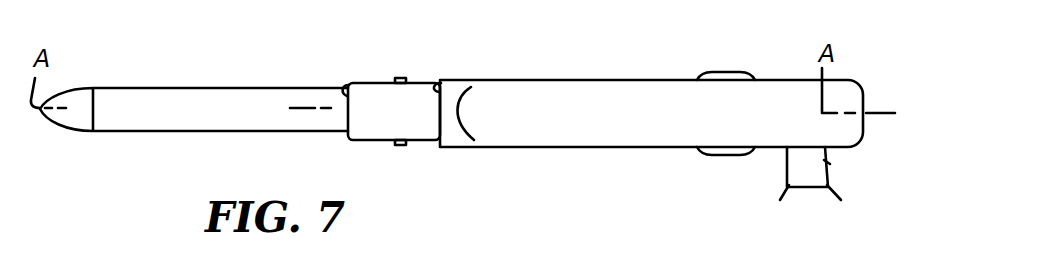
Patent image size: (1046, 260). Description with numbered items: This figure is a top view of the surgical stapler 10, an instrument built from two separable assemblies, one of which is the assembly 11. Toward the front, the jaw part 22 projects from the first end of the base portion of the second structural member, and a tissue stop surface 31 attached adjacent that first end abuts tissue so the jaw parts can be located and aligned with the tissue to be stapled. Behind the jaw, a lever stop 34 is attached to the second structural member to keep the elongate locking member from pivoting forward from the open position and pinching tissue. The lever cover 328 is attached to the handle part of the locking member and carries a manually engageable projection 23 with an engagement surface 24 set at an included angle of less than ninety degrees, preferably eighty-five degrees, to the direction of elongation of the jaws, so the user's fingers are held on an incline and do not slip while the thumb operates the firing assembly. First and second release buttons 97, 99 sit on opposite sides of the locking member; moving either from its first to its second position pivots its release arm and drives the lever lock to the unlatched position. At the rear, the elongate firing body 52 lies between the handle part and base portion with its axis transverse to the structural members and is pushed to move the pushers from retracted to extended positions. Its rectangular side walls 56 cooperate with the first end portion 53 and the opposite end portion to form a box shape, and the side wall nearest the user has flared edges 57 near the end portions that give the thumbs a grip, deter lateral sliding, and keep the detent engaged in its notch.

The surgical stapler 10 is at (474, 121).
The jaw part 22 is at (158, 95).
The tissue stop surface 31 is at (345, 86).
The lever stop 34 is at (401, 78).
The engagement surface 24 is at (436, 88).
The manually engageable projection 23 is at (460, 84).
The separable assembly 11 is at (641, 83).
The lever cover 328 is at (574, 87).
The second release button 99 is at (729, 74).
The first release button 97 is at (722, 158).
The elongate firing body 52 is at (812, 187).
The first end portion 53 is at (771, 209).
The rectangular side wall 56 is at (786, 186).
The flared edge 57 is at (850, 201).